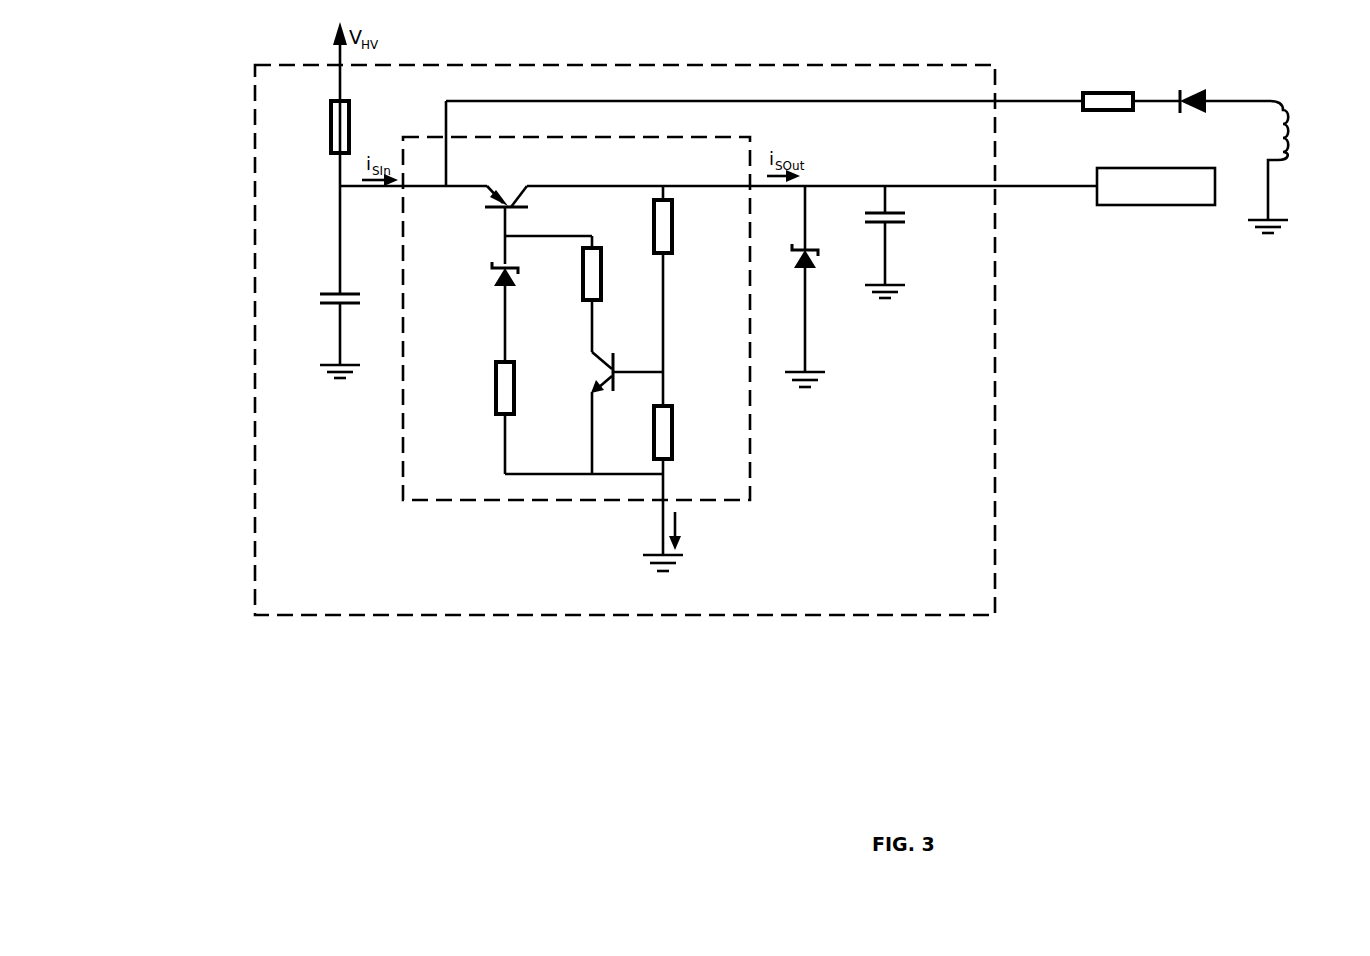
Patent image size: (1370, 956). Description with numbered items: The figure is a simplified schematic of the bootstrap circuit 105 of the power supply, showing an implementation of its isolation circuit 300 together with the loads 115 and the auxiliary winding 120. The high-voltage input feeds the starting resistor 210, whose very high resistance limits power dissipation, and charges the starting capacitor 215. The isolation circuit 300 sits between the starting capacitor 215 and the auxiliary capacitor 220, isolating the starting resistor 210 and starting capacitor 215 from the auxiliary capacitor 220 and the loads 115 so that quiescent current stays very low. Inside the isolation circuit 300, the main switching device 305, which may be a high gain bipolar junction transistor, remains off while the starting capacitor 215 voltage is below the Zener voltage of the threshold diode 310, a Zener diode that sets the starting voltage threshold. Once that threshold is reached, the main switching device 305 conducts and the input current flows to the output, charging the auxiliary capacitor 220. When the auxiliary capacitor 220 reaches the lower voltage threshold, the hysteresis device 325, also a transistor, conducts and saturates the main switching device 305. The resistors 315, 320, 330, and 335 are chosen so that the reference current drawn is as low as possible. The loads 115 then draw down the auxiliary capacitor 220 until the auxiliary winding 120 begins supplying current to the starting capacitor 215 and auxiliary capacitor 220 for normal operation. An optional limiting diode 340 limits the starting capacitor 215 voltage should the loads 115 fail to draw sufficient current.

The bootstrap circuit 105 is at (255, 176).
The loads 115 is at (1168, 206).
The auxiliary winding 120 is at (1285, 160).
The starting resistor 210 is at (352, 128).
The starting capacitor 215 is at (330, 302).
The auxiliary capacitor 220 is at (896, 223).
The isolation circuit 300 is at (556, 134).
The main switching device 305 is at (490, 211).
The threshold diode 310 is at (502, 282).
The resistor 315 is at (497, 412).
The resistor 320 is at (584, 284).
The hysteresis device 325 is at (614, 358).
The resistor 330 is at (673, 250).
The resistor 335 is at (673, 440).
The limiting diode 340 is at (802, 264).